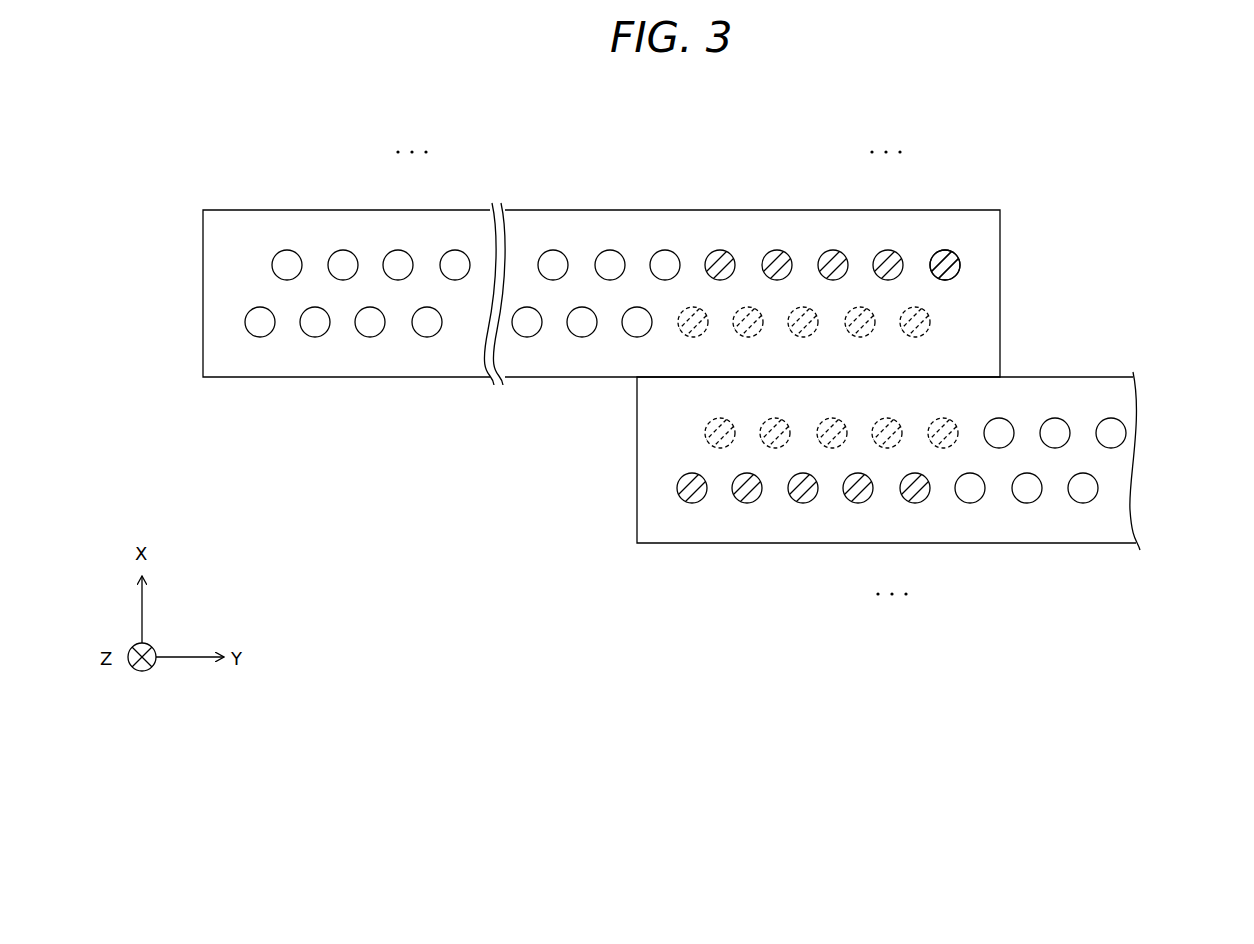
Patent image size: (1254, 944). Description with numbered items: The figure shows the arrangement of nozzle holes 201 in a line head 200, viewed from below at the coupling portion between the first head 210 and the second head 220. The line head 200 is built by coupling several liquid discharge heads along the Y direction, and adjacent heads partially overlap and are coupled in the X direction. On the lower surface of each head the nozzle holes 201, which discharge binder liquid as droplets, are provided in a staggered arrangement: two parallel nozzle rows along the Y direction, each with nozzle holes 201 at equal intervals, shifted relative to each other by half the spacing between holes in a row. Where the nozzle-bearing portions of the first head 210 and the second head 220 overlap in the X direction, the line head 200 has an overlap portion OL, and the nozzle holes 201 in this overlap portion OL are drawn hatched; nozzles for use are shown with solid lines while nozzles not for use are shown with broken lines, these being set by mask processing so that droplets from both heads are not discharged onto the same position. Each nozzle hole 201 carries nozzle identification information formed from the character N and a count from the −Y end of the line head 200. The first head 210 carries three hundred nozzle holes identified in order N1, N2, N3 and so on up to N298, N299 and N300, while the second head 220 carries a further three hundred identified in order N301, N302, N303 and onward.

The line head 200 is at (1158, 114).
The nozzle hole 201 is at (954, 256).
The first head 210 is at (610, 210).
The second head 220 is at (1043, 545).
The overlap portion OL is at (947, 204).
The nozzle identification information N1 is at (250, 311).
The nozzle identification information N2 is at (282, 251).
The nozzle identification information N3 is at (311, 309).
The nozzle identification information N298 is at (892, 252).
The nozzle identification information N299 is at (916, 307).
The nozzle identification information N300 is at (951, 254).
The nozzle identification information N301 is at (681, 499).
The nozzle identification information N302 is at (719, 448).
The nozzle identification information N303 is at (758, 499).